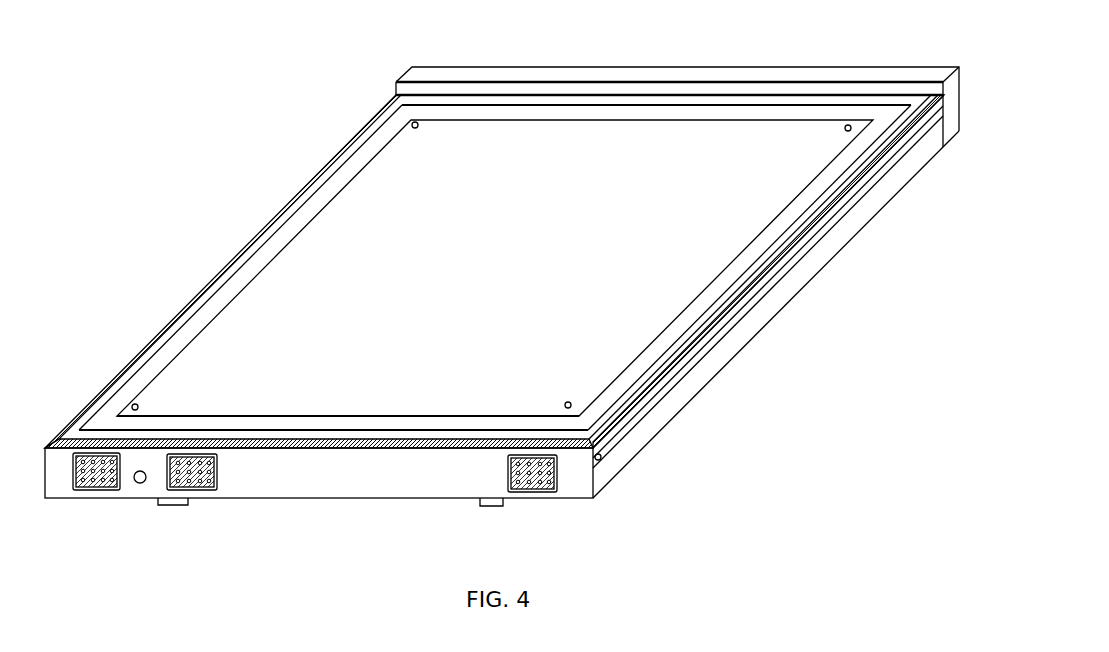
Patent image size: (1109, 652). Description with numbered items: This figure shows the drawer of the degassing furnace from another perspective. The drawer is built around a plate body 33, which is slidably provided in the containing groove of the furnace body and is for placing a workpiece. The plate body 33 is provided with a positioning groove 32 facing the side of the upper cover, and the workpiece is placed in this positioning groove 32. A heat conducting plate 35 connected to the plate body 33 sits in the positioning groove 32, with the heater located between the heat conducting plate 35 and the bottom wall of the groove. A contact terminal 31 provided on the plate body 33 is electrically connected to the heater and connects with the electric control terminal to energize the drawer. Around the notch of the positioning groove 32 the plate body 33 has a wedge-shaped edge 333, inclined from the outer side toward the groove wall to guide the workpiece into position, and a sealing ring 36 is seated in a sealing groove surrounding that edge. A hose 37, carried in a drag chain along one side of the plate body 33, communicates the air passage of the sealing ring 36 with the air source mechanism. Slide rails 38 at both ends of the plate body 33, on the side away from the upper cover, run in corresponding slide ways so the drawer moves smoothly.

The contact terminal 31 is at (74, 489).
The positioning groove 32 is at (506, 122).
The plate body 33 is at (268, 487).
The heat conducting plate 35 is at (255, 293).
The wedge-shaped edge 333 is at (180, 342).
The sealing ring 36 is at (102, 390).
The hose 37 is at (598, 456).
The slide rail 38 is at (497, 505).